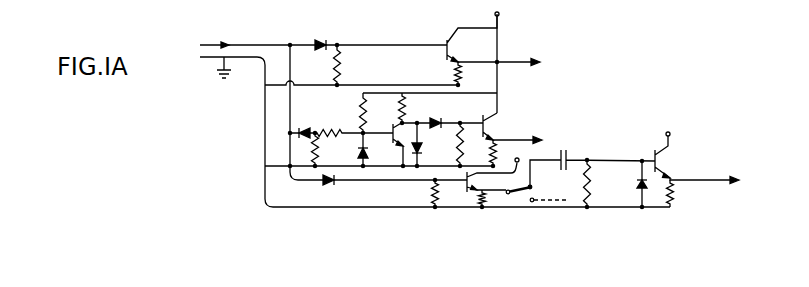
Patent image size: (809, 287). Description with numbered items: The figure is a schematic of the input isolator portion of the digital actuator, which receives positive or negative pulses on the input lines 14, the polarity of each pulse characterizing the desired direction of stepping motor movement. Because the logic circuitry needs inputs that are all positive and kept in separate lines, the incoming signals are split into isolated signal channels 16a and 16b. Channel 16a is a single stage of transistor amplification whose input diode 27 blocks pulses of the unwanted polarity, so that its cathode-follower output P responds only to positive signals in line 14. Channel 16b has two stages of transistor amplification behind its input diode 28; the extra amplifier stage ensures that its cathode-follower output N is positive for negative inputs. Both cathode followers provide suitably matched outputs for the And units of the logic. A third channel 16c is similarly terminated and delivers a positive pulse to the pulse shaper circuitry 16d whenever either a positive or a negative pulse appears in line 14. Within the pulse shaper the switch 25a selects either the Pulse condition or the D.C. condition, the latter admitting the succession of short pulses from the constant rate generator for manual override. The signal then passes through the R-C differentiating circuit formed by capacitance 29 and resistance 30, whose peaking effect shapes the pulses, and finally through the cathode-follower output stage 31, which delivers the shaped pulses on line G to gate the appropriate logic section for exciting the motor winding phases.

The input lines 14 is at (242, 58).
The input diode 27 is at (326, 44).
The input diode 28 is at (302, 131).
The signal channel 16a is at (517, 47).
The signal channel 16b is at (512, 115).
The channel 16c is at (368, 195).
The pulse shaper circuitry 16d is at (703, 152).
The capacitance 29 is at (568, 159).
The switch 25a is at (573, 182).
The resistance 30 is at (591, 179).
The cathode-follower output stage 31 is at (690, 192).